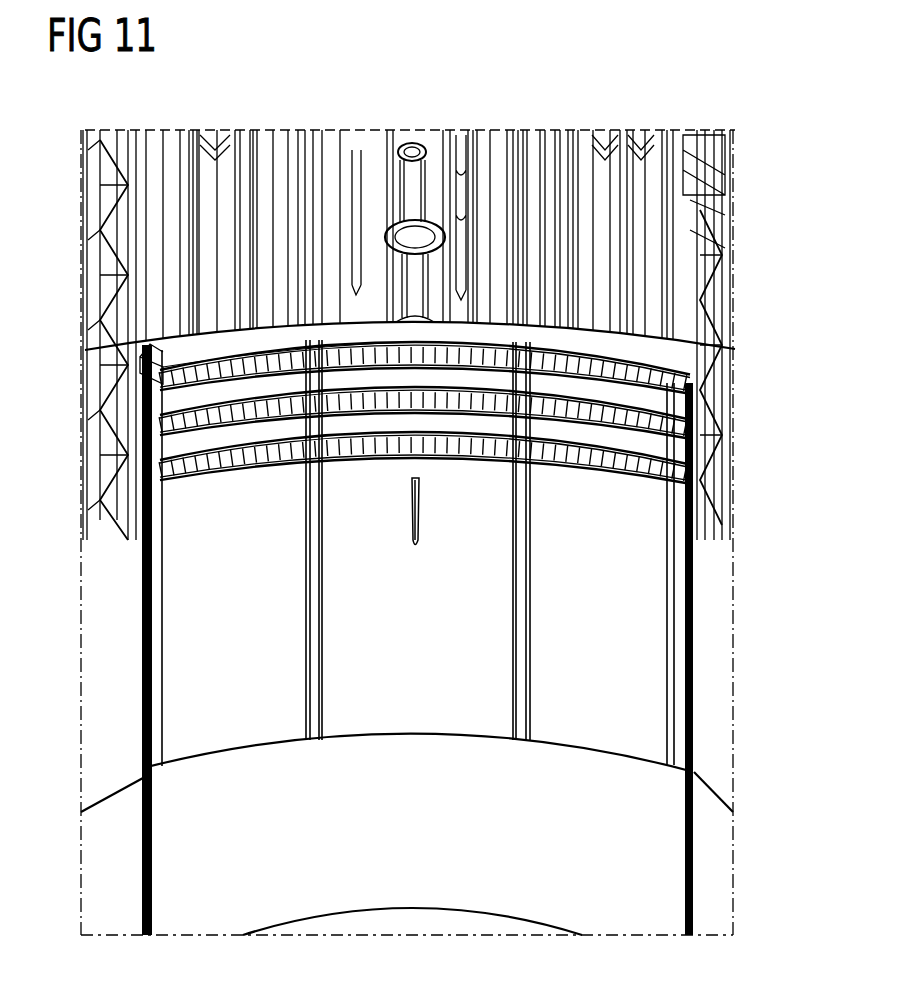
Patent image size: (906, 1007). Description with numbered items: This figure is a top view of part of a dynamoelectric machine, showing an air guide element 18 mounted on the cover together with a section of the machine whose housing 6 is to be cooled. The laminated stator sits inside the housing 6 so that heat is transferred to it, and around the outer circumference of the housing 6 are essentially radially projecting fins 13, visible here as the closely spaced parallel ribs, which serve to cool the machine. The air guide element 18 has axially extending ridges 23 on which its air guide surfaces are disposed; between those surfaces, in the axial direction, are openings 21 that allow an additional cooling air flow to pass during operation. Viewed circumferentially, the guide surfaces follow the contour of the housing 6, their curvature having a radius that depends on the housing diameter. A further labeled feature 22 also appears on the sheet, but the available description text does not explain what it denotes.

The tube bundle wall 6 is at (150, 175).
The lateral support structure 13 is at (620, 210).
The upper ring beam 18 is at (165, 355).
The guide rail 21 is at (690, 384).
The lower guide rail 22 is at (147, 462).
The support post 23 is at (313, 610).